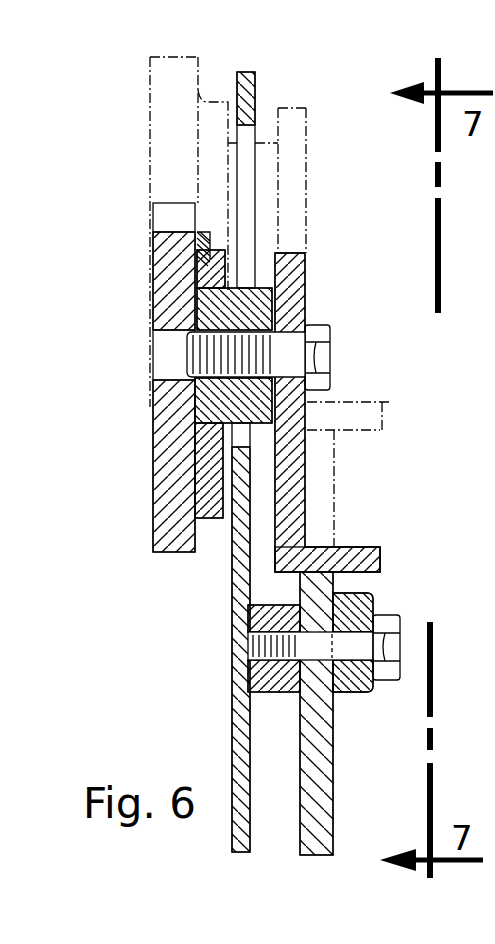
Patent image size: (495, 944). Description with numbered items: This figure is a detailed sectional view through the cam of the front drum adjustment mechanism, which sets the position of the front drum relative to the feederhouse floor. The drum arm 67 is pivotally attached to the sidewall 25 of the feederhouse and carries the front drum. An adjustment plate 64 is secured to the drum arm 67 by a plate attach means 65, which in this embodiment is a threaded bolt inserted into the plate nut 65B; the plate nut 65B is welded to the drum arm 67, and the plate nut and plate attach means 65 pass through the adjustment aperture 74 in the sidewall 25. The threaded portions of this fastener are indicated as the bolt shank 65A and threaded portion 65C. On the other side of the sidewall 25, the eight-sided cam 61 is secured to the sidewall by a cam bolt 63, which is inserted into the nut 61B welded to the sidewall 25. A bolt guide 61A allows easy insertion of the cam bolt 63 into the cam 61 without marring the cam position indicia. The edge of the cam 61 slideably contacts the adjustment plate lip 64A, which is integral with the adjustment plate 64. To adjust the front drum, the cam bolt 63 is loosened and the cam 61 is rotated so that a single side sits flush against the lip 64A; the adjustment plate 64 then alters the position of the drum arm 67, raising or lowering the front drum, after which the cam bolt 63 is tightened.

The adjustment aperture 74 is at (257, 137).
The adjustment plate 64 is at (305, 268).
The adjustment plate lip 64A is at (366, 547).
The plate attach means 65 is at (328, 326).
The bolt shank 65A is at (188, 350).
The plate nut 65B is at (212, 409).
The threaded portion 65C is at (205, 270).
The drum arm 67 is at (153, 505).
The cam bolt 63 is at (388, 616).
The cam 61 is at (333, 823).
The bolt guide 61A is at (355, 692).
The nut 61B is at (272, 694).
The sidewall 25 is at (228, 737).